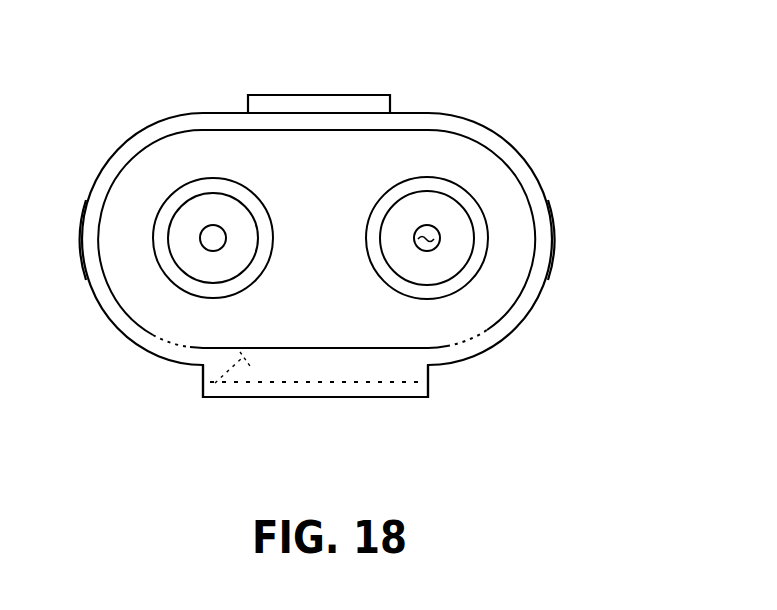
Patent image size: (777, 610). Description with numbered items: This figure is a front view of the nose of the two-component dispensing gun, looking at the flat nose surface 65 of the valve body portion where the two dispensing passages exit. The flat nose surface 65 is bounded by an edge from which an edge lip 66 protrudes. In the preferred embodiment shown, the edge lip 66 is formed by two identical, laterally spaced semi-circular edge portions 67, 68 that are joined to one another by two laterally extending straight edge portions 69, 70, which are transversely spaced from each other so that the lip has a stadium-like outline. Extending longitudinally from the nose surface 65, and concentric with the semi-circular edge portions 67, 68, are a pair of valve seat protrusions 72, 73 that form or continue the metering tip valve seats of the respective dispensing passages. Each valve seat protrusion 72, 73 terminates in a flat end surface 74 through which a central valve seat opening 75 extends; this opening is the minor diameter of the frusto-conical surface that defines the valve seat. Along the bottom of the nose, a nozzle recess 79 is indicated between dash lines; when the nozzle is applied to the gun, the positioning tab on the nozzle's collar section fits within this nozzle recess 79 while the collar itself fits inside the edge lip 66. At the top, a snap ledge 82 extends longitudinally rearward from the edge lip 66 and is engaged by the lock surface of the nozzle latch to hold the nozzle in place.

The flat nose surface 65 is at (338, 200).
The edge lip 66 is at (513, 158).
The semi-circular edge portion 67 is at (547, 275).
The semi-circular edge portion 68 is at (80, 228).
The straight edge portion 69 is at (447, 113).
The straight edge portion 70 is at (280, 348).
The valve seat protrusion 72 is at (213, 178).
The valve seat protrusion 73 is at (465, 187).
The flat end surface 74 is at (243, 273).
The central valve seat opening 75 is at (433, 247).
The nozzle recess 79 is at (243, 355).
The snap ledge 82 is at (330, 95).